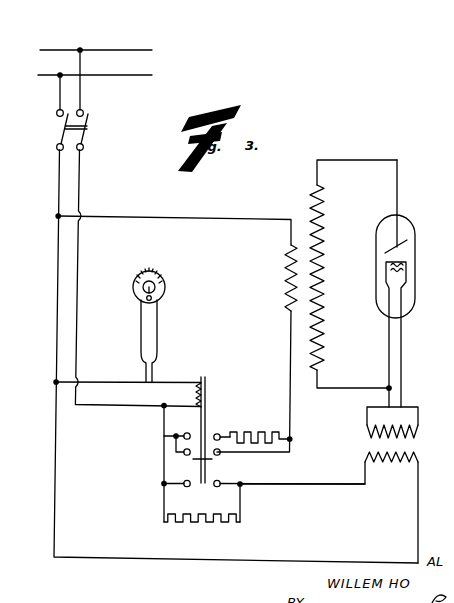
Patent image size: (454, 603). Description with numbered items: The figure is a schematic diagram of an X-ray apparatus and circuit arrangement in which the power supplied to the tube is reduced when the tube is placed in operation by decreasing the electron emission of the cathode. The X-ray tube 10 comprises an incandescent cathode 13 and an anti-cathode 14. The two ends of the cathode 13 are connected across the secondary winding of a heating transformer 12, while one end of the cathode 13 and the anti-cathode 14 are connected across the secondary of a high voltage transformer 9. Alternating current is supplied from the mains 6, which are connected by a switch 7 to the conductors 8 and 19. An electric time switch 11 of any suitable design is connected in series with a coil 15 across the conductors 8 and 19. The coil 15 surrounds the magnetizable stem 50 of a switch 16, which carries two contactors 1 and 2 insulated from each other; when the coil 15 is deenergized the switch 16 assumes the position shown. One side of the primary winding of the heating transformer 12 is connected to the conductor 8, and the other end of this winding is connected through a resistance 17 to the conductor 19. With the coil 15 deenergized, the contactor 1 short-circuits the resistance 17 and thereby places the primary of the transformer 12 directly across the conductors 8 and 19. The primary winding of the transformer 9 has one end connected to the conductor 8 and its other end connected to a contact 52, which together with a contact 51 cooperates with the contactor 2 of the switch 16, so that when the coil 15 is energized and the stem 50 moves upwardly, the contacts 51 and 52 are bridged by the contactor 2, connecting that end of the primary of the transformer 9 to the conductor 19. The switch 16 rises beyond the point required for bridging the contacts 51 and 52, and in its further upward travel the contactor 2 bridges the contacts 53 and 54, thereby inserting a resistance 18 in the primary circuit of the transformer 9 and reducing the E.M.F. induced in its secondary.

The mains 6 is at (93, 62).
The switch 7 is at (72, 137).
The conductor 8 is at (57, 173).
The conductor 19 is at (83, 173).
The high voltage transformer 9 is at (305, 248).
The electric time switch 11 is at (152, 335).
The X-ray tube 10 is at (417, 263).
The anti-cathode 14 is at (405, 232).
The incandescent cathode 13 is at (400, 267).
The heating transformer 12 is at (403, 447).
The magnetizable stem 50 is at (207, 380).
The coil 15 is at (206, 393).
The switch 16 is at (201, 423).
The contact 54 is at (242, 427).
The resistance 18 is at (247, 428).
The contact 53 is at (186, 433).
The contact 51 is at (186, 455).
The contact 52 is at (220, 455).
The contactor 1 is at (200, 488).
The contactor 2 is at (211, 460).
The resistance 17 is at (188, 526).